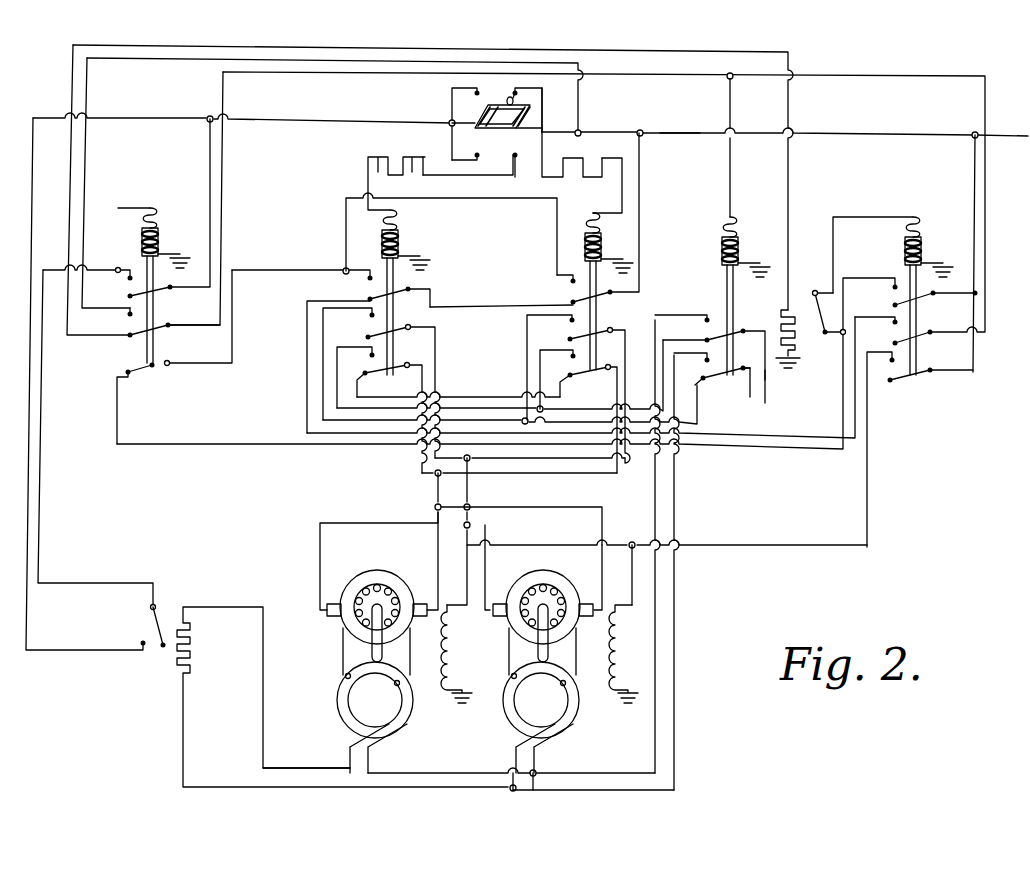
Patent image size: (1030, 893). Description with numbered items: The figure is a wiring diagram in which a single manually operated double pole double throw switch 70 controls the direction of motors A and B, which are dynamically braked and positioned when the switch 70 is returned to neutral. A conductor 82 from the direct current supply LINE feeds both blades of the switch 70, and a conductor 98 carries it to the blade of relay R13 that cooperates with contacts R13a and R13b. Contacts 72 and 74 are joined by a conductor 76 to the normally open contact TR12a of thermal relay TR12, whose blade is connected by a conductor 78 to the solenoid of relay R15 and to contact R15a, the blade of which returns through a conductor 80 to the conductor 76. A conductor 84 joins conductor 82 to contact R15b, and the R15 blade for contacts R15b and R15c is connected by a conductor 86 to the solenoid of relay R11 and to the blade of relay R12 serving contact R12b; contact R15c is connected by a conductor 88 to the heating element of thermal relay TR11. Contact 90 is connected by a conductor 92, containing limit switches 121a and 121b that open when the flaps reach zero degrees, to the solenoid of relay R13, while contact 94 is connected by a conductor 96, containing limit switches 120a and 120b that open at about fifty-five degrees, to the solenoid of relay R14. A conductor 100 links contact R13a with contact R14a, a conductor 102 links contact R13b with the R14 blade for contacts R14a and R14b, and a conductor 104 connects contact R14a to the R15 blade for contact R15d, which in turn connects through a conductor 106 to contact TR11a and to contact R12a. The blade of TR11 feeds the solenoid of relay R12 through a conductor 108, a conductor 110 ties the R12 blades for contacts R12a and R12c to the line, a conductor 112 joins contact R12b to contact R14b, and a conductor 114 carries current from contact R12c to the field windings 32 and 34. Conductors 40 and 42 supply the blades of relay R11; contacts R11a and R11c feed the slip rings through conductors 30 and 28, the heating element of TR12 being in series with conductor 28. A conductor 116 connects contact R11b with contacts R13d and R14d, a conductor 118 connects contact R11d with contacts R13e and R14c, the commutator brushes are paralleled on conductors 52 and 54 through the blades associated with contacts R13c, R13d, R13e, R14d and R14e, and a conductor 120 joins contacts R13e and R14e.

The conductor 28 is at (695, 496).
The conductor 30 is at (650, 496).
The field winding 32 is at (457, 652).
The field winding 34 is at (622, 652).
The conductor 40 is at (756, 366).
The conductor 42 is at (766, 372).
The conductor 52 is at (437, 355).
The conductor 54 is at (416, 457).
The double pole double throw switch 70 is at (497, 110).
The contact 72 is at (475, 95).
The contact 74 is at (475, 153).
The conductor 76 is at (310, 118).
The conductor 78 is at (66, 582).
The conductor 80 is at (208, 181).
The conductor 82 is at (672, 132).
The conductor 84 is at (86, 164).
The conductor 86 is at (226, 222).
The conductor 88 is at (72, 178).
The contact 90 is at (506, 90).
The conductor 92 is at (543, 114).
The contact 94 is at (510, 149).
The conductor 96 is at (483, 178).
The conductor 98 is at (641, 193).
The conductor 100 is at (481, 200).
The conductor 102 is at (471, 304).
The conductor 104 is at (278, 270).
The conductor 106 is at (217, 441).
The conductor 108 is at (851, 217).
The conductor 110 is at (974, 176).
The conductor 112 is at (299, 367).
The conductor 114 is at (864, 505).
The conductor 116 is at (528, 345).
The conductor 118 is at (526, 322).
The conductor 120 is at (472, 395).
The limit switch 120a is at (367, 161).
The limit switch 120b is at (424, 177).
The limit switch 121a is at (583, 180).
The limit switch 121b is at (618, 182).
The relay R11 is at (746, 224).
The normally open contact R11a is at (703, 318).
The normally closed contact R11b is at (704, 341).
The normally open contact R11c is at (706, 364).
The normally closed contact R11d is at (706, 382).
The relay R12 is at (929, 296).
The normally open contact R12a is at (893, 289).
The normally open contact R12b is at (896, 334).
The normally open contact R12c is at (888, 362).
The relay R13 is at (609, 291).
The normally open contact R13a is at (570, 279).
The normally closed contact R13b is at (570, 302).
The contact R13c is at (572, 319).
The normally open contact R13d is at (573, 364).
The normally closed contact R13e is at (575, 380).
The relay R14 is at (406, 292).
The normally open contact R14a is at (366, 282).
The normally closed contact R14b is at (364, 302).
The contact R14c is at (370, 316).
The normally open contact R14d is at (372, 364).
The normally closed contact R14e is at (367, 378).
The relay R15 is at (154, 285).
The normally open contact R15a is at (124, 281).
The normally open contact R15b is at (124, 318).
The normally closed contact R15c is at (124, 333).
The normally closed contact R15d is at (124, 367).
The thermal relay TR11 is at (776, 331).
The normally closed contact TR11a is at (826, 338).
The thermal relay TR12 is at (346, 699).
The normally open contact TR12a is at (140, 641).
The motor A is at (459, 644).
The motor B is at (579, 657).
The supply line LINE is at (785, 128).